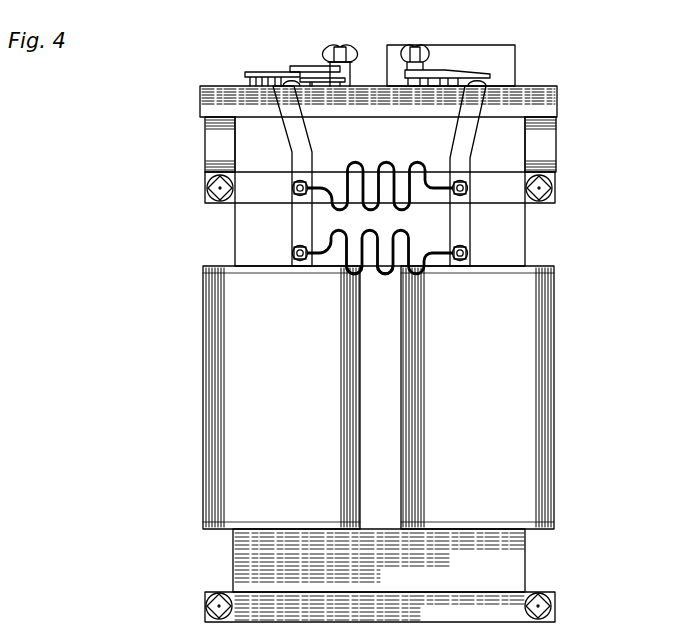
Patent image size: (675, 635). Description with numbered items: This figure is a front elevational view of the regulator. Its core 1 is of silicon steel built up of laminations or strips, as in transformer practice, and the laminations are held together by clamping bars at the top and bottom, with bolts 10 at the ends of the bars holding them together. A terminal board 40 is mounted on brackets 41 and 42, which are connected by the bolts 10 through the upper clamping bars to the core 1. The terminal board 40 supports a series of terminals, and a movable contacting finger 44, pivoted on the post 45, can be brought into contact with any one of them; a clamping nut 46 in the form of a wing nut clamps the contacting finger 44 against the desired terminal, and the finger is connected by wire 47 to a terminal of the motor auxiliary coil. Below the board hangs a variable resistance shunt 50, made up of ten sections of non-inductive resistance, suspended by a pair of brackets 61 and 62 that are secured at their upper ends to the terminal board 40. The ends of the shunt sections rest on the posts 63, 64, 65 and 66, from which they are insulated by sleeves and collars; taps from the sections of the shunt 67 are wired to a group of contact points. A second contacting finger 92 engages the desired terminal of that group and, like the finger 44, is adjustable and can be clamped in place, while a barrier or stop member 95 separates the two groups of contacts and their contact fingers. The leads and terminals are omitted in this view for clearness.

The core 1 is at (516, 253).
The bolts 10 is at (207, 188).
The terminal board 40 is at (541, 108).
The bracket 41 is at (220, 132).
The bracket 42 is at (540, 153).
The movable contacting finger 44 is at (302, 64).
The post 45 is at (392, 22).
The clamping nut 46 is at (333, 48).
The wire 47 is at (290, 72).
The variable resistance shunt 50 is at (317, 207).
The bracket 61 is at (298, 151).
The bracket 62 is at (456, 154).
The post 63 is at (296, 194).
The post 64 is at (292, 252).
The post 65 is at (462, 194).
The post 66 is at (468, 253).
The shunt 67 is at (352, 264).
The contacting finger 92 is at (447, 68).
The barrier 95 is at (495, 60).